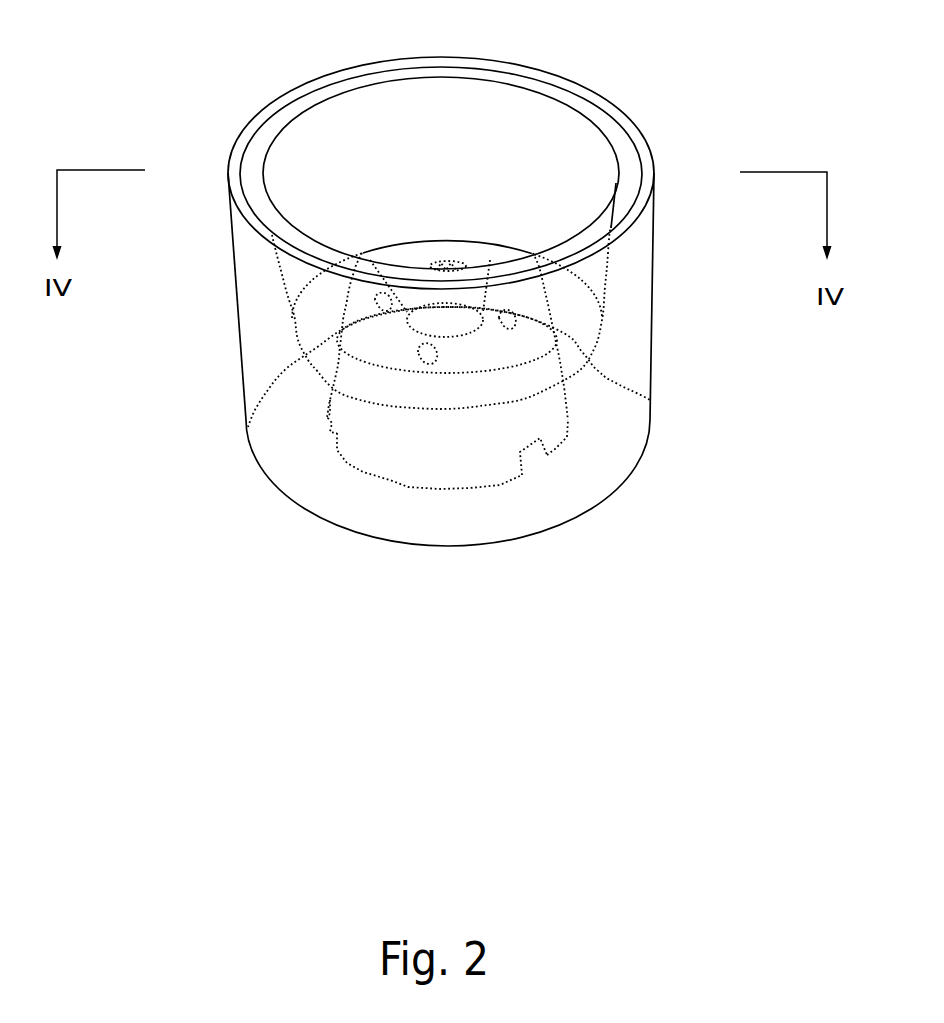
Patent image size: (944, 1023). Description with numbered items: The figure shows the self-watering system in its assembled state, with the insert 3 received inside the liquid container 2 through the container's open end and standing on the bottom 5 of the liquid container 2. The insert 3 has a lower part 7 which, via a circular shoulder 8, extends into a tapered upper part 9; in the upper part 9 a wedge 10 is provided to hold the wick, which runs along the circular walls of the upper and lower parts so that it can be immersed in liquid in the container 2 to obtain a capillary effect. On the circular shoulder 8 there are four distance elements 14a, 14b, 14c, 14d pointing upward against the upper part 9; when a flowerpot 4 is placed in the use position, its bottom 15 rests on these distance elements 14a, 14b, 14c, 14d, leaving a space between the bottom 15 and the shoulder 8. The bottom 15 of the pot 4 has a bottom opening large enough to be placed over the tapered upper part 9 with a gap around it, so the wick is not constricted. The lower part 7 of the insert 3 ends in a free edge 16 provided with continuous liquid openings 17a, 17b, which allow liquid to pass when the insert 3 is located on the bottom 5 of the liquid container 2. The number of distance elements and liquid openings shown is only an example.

The liquid container 2 is at (249, 132).
The insert 3 is at (567, 392).
The flowerpot 4 is at (303, 117).
The bottom 5 is at (372, 540).
The lower part 7 is at (327, 393).
The circular shoulder 8 is at (357, 312).
The tapered upper part 9 is at (417, 297).
The wedge 10 is at (440, 273).
The distance element 14a is at (373, 300).
The distance element 14b is at (423, 358).
The distance element 14c is at (517, 323).
The distance element 14d is at (472, 284).
The bottom 15 is at (582, 362).
The free edge 16 is at (373, 475).
The liquid opening 17a is at (332, 435).
The liquid opening 17b is at (530, 458).